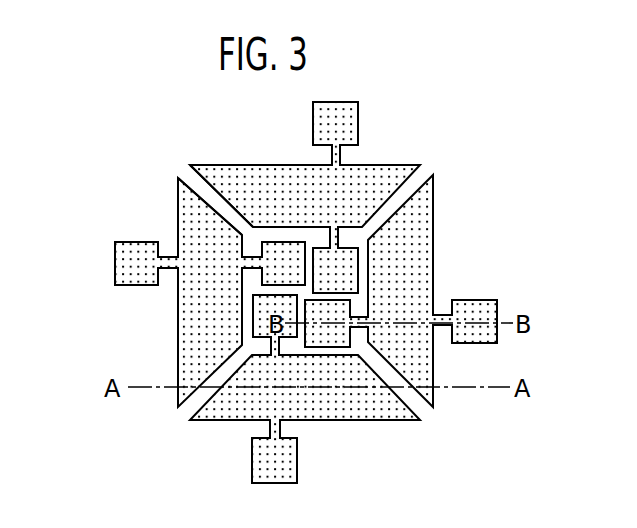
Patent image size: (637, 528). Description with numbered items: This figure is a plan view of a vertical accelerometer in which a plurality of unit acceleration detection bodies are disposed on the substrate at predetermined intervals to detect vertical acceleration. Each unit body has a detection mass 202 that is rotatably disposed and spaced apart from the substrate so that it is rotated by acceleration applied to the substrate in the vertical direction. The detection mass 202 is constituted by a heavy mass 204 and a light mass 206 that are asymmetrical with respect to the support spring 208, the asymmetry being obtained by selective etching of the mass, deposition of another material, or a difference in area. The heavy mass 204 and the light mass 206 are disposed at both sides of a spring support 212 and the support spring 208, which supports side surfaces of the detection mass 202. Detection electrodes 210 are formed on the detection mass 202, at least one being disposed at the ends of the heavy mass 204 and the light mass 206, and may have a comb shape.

The detection mass 202 is at (296, 168).
The heavy mass 204 is at (186, 322).
The light mass 206 is at (186, 208).
The support spring 208 is at (166, 250).
The detection electrode 210 is at (186, 172).
The spring support 212 is at (116, 282).